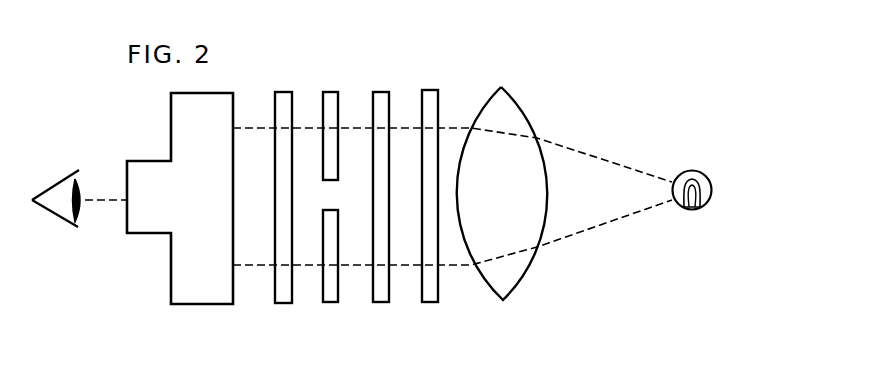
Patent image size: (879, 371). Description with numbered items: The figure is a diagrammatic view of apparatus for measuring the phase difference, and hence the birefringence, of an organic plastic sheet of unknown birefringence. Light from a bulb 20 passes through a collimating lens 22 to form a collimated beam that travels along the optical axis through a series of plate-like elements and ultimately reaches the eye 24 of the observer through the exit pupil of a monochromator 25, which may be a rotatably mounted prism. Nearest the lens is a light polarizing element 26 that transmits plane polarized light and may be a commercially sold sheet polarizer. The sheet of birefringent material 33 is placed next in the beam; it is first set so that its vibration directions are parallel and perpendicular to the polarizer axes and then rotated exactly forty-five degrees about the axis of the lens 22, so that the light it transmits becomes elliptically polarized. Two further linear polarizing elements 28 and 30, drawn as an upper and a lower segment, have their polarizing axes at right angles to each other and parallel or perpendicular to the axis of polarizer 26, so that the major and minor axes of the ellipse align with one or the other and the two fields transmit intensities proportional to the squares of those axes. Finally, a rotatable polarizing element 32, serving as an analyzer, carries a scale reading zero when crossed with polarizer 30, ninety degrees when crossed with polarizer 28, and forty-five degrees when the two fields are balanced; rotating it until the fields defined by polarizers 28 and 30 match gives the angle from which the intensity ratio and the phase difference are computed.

The bulb 20 is at (700, 210).
The collimating lens 22 is at (505, 287).
The eye 24 is at (47, 211).
The monochromator 25 is at (185, 297).
The light polarizing element 26 is at (432, 297).
The linear polarizing element 28 is at (330, 297).
The linear polarizing element 30 is at (330, 94).
The rotatable polarizing element 32 is at (283, 297).
The sheet of birefringent material 33 is at (382, 297).